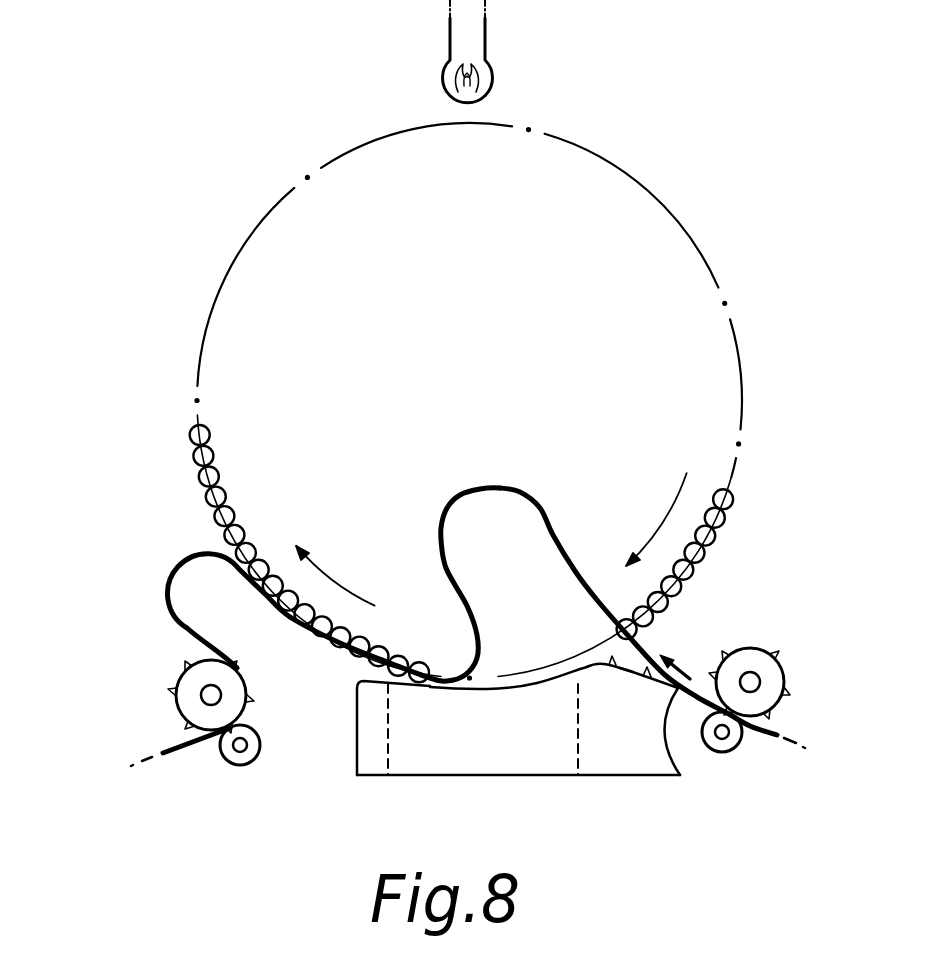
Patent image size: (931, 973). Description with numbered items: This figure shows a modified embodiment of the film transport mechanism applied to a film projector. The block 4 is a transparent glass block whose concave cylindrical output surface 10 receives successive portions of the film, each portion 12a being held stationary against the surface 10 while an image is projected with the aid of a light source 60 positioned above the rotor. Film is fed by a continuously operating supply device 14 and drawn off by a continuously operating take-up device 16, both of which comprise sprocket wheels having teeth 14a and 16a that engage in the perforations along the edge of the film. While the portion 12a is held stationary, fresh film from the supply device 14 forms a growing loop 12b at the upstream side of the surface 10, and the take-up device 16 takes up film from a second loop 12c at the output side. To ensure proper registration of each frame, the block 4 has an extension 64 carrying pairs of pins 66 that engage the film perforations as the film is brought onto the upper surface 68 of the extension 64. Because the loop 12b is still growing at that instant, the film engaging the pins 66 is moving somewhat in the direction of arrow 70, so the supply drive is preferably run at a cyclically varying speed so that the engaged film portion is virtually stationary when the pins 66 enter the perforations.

The light source 60 is at (487, 60).
The film portion 12a is at (460, 588).
The film loop 12b is at (565, 545).
The second film loop 12c is at (178, 560).
The concave cylindrical output surface 10 is at (450, 686).
The block 4 is at (530, 764).
The extension 64 is at (627, 760).
The pins 66 is at (611, 661).
The upper surface 68 is at (624, 676).
The arrow 70 is at (683, 666).
The supply device 14 is at (787, 652).
The sprocket wheel teeth 14a is at (763, 643).
The take-up device 16 is at (177, 715).
The sprocket wheel teeth 16a is at (184, 666).